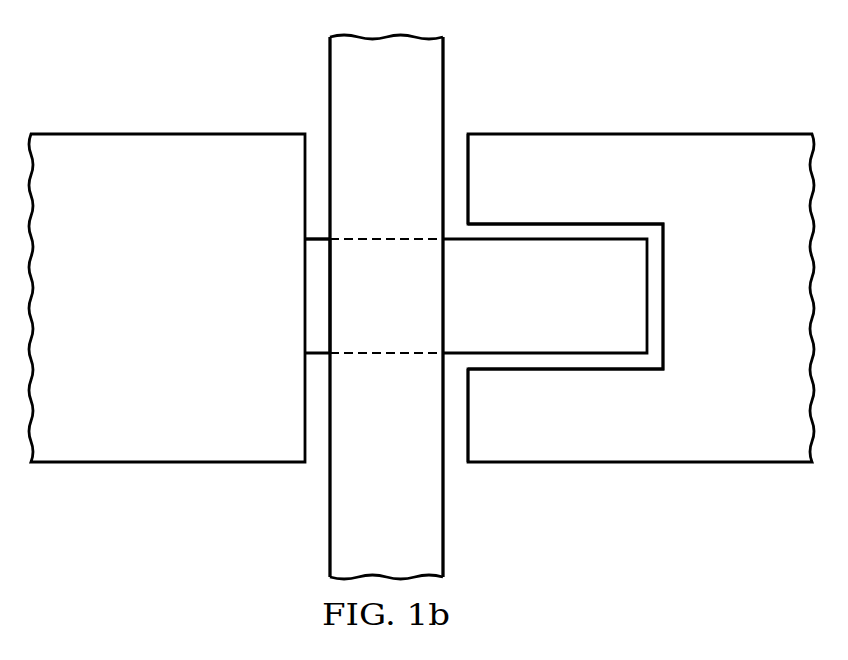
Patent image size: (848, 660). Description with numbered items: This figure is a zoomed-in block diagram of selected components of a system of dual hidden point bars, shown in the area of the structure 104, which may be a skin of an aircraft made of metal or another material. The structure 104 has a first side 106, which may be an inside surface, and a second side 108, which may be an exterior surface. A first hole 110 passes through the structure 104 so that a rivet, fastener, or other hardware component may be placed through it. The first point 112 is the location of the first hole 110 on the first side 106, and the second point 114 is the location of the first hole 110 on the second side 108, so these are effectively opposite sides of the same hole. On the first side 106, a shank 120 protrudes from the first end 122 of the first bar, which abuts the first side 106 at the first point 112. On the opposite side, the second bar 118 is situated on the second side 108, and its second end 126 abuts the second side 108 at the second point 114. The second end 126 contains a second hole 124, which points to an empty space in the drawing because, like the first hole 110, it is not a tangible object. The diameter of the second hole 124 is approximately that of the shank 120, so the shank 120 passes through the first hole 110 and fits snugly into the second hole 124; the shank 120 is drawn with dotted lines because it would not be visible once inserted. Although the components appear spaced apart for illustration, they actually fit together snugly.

The structure 104 is at (368, 152).
The first side 106 is at (329, 84).
The second side 108 is at (443, 84).
The first hole 110 is at (328, 235).
The first point 112 is at (331, 239).
The second point 114 is at (443, 238).
The second bar 118 is at (713, 312).
The shank 120 is at (385, 357).
The first end 122 is at (303, 408).
The second hole 124 is at (582, 363).
The second end 126 is at (470, 407).